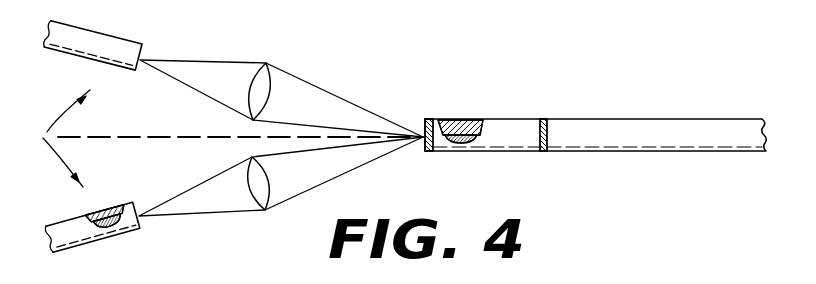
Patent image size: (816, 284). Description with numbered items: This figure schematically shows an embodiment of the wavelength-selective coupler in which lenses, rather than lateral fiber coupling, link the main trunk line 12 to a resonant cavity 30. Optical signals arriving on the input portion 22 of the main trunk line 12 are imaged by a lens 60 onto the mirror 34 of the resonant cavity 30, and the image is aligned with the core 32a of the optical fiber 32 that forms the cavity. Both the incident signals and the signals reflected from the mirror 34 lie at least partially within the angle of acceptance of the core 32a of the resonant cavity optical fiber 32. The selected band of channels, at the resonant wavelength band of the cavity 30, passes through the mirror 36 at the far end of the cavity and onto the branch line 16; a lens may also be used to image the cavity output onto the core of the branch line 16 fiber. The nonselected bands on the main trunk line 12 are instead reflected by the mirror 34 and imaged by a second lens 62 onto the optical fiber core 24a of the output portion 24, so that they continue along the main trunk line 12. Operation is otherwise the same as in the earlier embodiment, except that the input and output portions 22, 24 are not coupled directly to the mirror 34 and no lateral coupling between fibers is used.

The main trunk line 12 is at (225, 138).
The branch line 16 is at (648, 118).
The input portion 22 is at (103, 33).
The output portion 24 is at (91, 239).
The optical fiber core 24a is at (106, 218).
The resonant cavity 30 is at (584, 134).
The optical fiber 32 is at (507, 152).
The core 32a is at (459, 141).
The mirror 34 is at (432, 118).
The mirror 36 is at (544, 119).
The lens 60 is at (266, 62).
The lens 62 is at (263, 213).